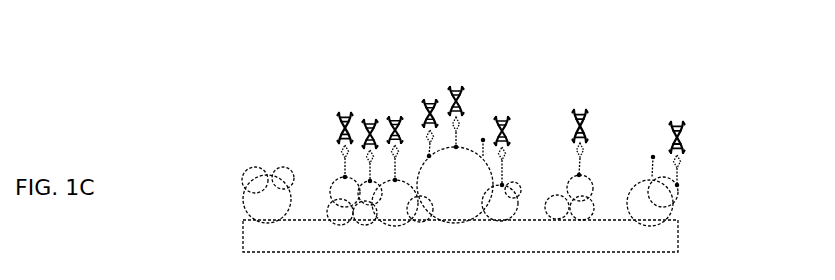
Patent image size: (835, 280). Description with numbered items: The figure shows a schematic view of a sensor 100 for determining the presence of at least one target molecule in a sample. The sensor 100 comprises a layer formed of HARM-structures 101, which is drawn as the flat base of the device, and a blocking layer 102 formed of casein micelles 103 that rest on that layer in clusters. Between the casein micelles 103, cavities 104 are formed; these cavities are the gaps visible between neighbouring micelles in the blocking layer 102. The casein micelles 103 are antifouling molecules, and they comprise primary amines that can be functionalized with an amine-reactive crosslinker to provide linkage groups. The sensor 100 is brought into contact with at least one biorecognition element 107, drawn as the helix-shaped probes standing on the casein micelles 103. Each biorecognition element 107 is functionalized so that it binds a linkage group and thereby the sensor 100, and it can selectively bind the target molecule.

The sensor 100 is at (697, 82).
The layer formed of HARM-structures 101 is at (460, 236).
The blocking layer 102 is at (230, 157).
The casein micelles 103 is at (283, 167).
The cavities 104 is at (300, 217).
The biorecognition element 107 is at (500, 118).